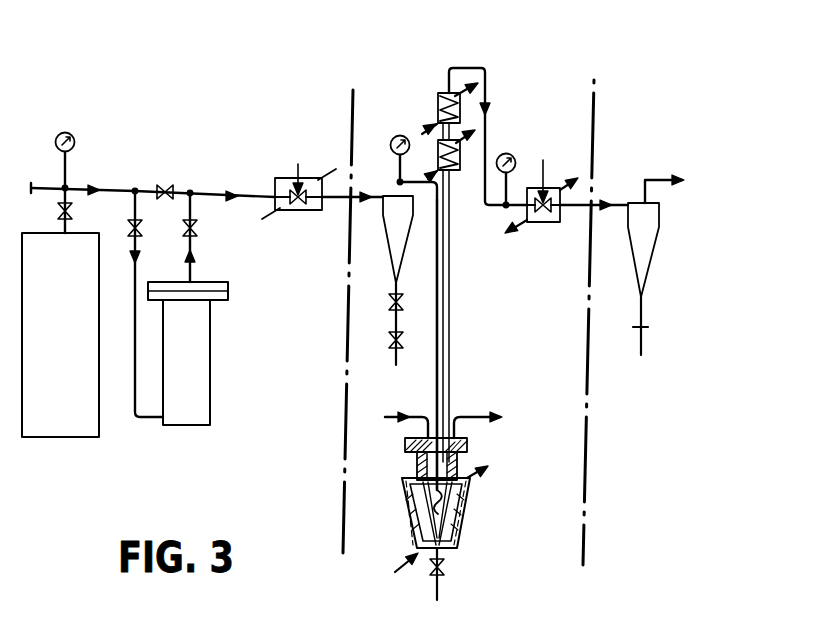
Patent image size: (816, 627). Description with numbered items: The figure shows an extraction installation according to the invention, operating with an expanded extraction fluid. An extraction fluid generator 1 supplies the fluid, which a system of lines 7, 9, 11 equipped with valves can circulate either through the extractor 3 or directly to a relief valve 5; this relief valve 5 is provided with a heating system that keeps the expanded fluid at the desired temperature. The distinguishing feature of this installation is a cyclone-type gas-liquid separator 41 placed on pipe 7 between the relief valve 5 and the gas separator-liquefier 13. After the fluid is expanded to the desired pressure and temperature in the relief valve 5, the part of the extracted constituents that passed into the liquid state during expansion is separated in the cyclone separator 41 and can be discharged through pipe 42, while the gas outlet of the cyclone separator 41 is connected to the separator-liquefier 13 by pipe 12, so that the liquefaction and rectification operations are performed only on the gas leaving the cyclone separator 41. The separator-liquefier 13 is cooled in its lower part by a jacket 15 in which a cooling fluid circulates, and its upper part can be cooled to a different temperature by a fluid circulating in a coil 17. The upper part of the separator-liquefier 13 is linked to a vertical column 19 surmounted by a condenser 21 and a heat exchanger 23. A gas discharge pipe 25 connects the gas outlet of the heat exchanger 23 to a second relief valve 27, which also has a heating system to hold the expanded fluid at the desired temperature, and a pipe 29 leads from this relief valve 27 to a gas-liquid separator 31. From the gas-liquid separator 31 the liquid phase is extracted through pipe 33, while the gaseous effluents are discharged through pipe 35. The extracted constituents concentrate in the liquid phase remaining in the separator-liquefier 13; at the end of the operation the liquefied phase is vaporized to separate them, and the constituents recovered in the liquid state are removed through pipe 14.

The extraction fluid generator 1 is at (67, 405).
The extractor 3 is at (190, 412).
The relief valve 5 is at (278, 181).
The line 7 is at (112, 189).
The line 9 is at (140, 420).
The line 11 is at (193, 268).
The pipe 12 is at (435, 330).
The gas separator-liquefier 13 is at (480, 506).
The pipe 14 is at (437, 592).
The jacket 15 is at (458, 525).
The coil 17 is at (453, 463).
The vertical column 19 is at (443, 350).
The condenser 21 is at (462, 165).
The heat exchanger 23 is at (438, 100).
The gas discharge pipe 25 is at (499, 138).
The relief valve 27 is at (543, 222).
The pipe 29 is at (598, 204).
The gas-liquid separator 31 is at (642, 248).
The pipe 33 is at (640, 337).
The pipe 35 is at (645, 180).
The cyclone-type gas-liquid separator 41 is at (397, 217).
The pipe 42 is at (395, 283).